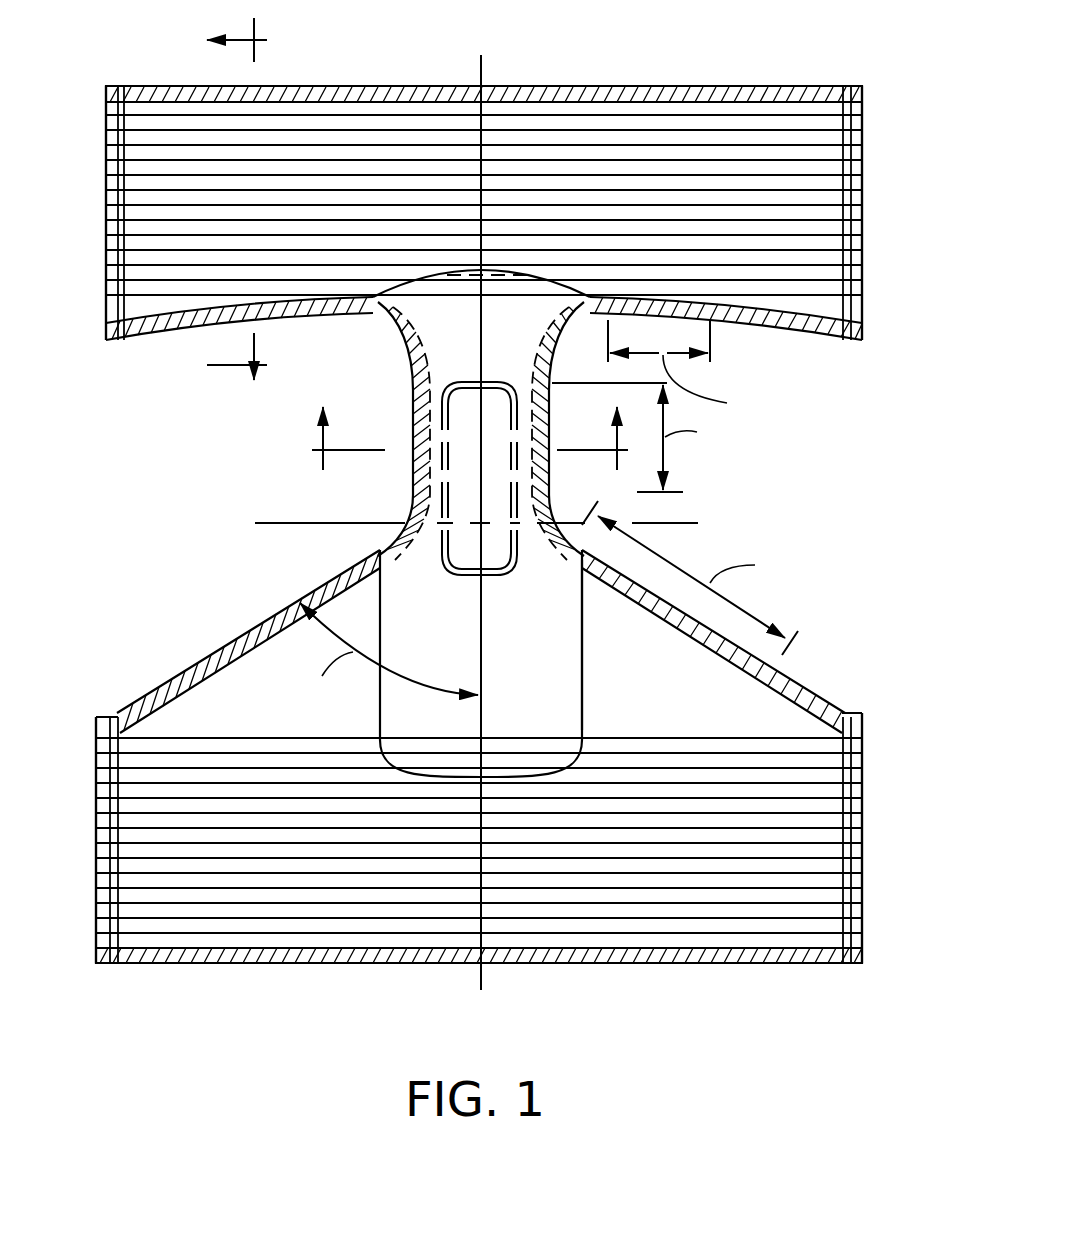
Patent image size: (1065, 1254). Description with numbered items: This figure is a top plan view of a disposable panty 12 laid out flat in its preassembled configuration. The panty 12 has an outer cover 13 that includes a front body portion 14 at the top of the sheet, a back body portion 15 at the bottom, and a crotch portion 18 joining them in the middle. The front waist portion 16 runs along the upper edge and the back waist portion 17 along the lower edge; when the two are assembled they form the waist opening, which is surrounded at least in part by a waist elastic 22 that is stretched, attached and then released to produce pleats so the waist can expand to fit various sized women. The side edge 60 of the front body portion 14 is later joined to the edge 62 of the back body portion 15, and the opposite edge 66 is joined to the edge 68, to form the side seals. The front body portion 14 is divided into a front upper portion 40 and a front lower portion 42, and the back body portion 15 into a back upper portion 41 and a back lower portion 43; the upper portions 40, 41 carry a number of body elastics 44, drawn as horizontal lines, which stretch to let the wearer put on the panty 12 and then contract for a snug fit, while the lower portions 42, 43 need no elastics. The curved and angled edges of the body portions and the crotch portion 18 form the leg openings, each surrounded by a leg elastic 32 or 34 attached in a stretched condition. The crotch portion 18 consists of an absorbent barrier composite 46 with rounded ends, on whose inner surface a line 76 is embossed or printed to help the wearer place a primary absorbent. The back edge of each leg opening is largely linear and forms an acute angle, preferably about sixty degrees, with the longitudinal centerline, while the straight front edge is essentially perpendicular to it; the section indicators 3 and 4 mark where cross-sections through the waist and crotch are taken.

The panty 12 is at (808, 50).
The outer cover 13 is at (773, 717).
The front body portion 14 is at (806, 370).
The back body portion 15 is at (166, 656).
The front waist portion 16 is at (683, 86).
The back waist portion 17 is at (687, 965).
The crotch portion 18 is at (412, 380).
The waist elastic 22 is at (360, 100).
The leg elastic 32 is at (735, 318).
The leg elastic 34 is at (272, 622).
The front upper portion 40 is at (567, 140).
The back upper portion 41 is at (617, 895).
The front lower portion 42 is at (523, 332).
The back lower portion 43 is at (686, 706).
The body elastics 44 is at (813, 200).
The absorbent barrier composite 46 is at (552, 686).
The edge of front body portion 60 is at (863, 238).
The edge of back body portion 62 is at (863, 785).
The edge of front body portion 66 is at (104, 200).
The edge of back body portion 68 is at (96, 835).
The line 76 is at (508, 572).
The section line 3- 3 is at (248, 202).
The section line 4- 4 is at (470, 457).